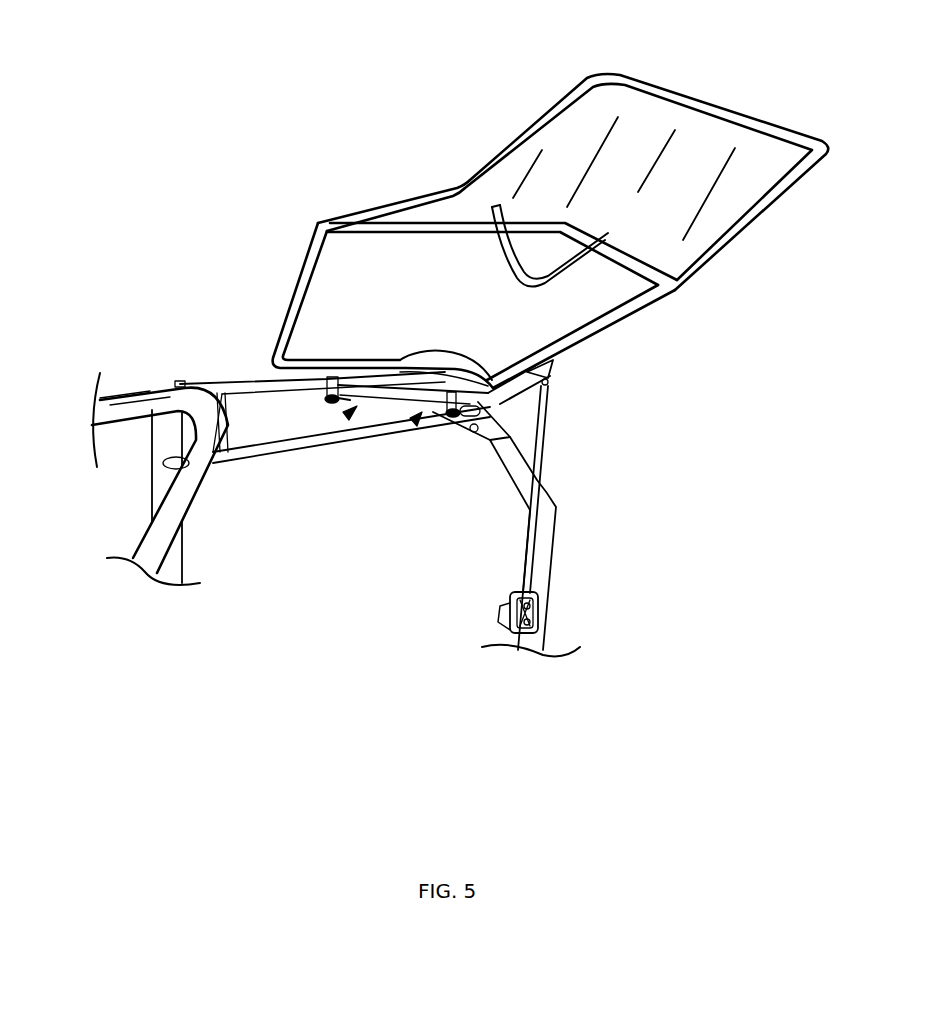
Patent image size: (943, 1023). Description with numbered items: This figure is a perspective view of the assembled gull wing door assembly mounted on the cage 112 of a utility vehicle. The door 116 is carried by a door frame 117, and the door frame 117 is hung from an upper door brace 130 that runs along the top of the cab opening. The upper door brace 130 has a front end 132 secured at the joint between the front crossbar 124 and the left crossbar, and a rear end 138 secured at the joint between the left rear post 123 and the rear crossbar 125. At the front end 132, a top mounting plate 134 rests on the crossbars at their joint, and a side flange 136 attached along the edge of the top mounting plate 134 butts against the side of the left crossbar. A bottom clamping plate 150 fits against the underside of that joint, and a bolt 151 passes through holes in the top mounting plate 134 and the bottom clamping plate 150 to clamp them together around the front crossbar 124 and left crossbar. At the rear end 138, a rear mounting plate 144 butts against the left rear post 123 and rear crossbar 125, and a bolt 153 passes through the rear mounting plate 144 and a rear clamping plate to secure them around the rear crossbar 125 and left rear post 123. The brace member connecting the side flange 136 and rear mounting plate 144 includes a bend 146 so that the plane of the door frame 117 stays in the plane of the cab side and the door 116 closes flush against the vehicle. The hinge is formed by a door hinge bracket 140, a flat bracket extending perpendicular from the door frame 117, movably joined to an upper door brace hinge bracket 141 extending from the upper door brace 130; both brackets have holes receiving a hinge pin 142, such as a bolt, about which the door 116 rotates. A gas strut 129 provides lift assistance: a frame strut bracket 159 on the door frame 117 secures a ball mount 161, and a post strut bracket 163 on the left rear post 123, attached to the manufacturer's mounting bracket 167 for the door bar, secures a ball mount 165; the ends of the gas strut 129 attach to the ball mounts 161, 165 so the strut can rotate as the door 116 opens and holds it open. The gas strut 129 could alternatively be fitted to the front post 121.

The cage 112 is at (575, 530).
The door 116 is at (468, 127).
The door frame 117 is at (297, 267).
The front post 121 is at (160, 540).
The left rear post 123 is at (543, 570).
The front crossbar 124 is at (130, 412).
The rear crossbar 125 is at (253, 457).
The gas strut 129 is at (542, 457).
The upper door brace 130 is at (345, 420).
The front end 132 is at (215, 388).
The top mounting plate 134 is at (150, 388).
The side flange 136 is at (232, 403).
The rear end 138 is at (417, 427).
The door hinge bracket 140 is at (335, 395).
The upper door brace hinge bracket 141 is at (325, 378).
The hinge pin 142 is at (368, 372).
The rear mounting plate 144 is at (492, 445).
The bend 146 is at (262, 378).
The bottom clamping plate 150 is at (205, 478).
The bolt 151 is at (178, 382).
The bolt 153 is at (470, 432).
The frame strut bracket 159 is at (557, 370).
The ball mount 161 is at (548, 383).
The post strut bracket 163 is at (528, 637).
The ball mount 165 is at (500, 613).
The mounting bracket 167 is at (503, 623).